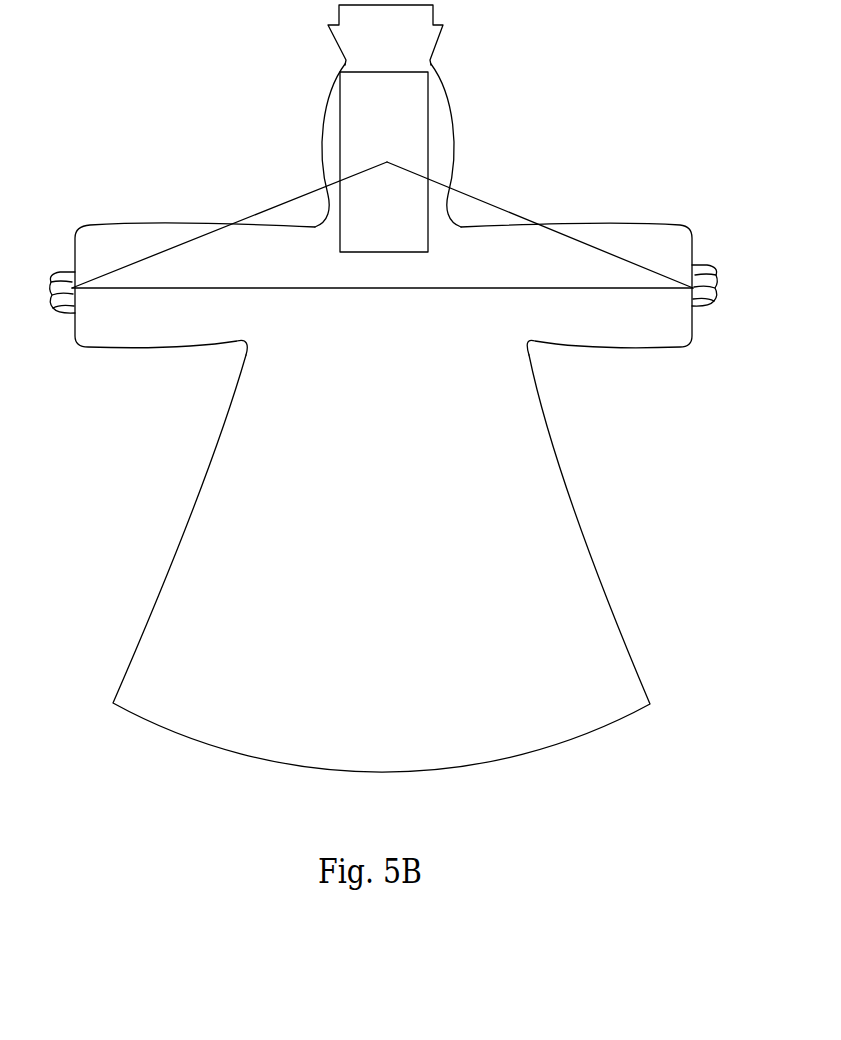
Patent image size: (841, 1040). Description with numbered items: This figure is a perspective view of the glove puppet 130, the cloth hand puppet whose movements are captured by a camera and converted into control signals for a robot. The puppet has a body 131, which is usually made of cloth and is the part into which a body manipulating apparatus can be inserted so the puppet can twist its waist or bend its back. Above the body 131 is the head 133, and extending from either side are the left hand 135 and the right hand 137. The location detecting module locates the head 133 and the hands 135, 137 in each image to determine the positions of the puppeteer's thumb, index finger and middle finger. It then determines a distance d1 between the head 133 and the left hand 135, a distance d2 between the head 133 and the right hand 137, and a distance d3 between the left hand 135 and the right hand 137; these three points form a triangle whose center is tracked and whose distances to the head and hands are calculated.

The glove puppet 130 is at (123, 350).
The body 131 is at (623, 352).
The head 133 is at (405, 106).
The left hand 135 is at (702, 264).
The right hand 137 is at (65, 271).
The distance between the head and the left hand d1 is at (495, 205).
The distance between the head and the right hand d2 is at (260, 208).
The distance between the left hand and the right hand d3 is at (563, 291).